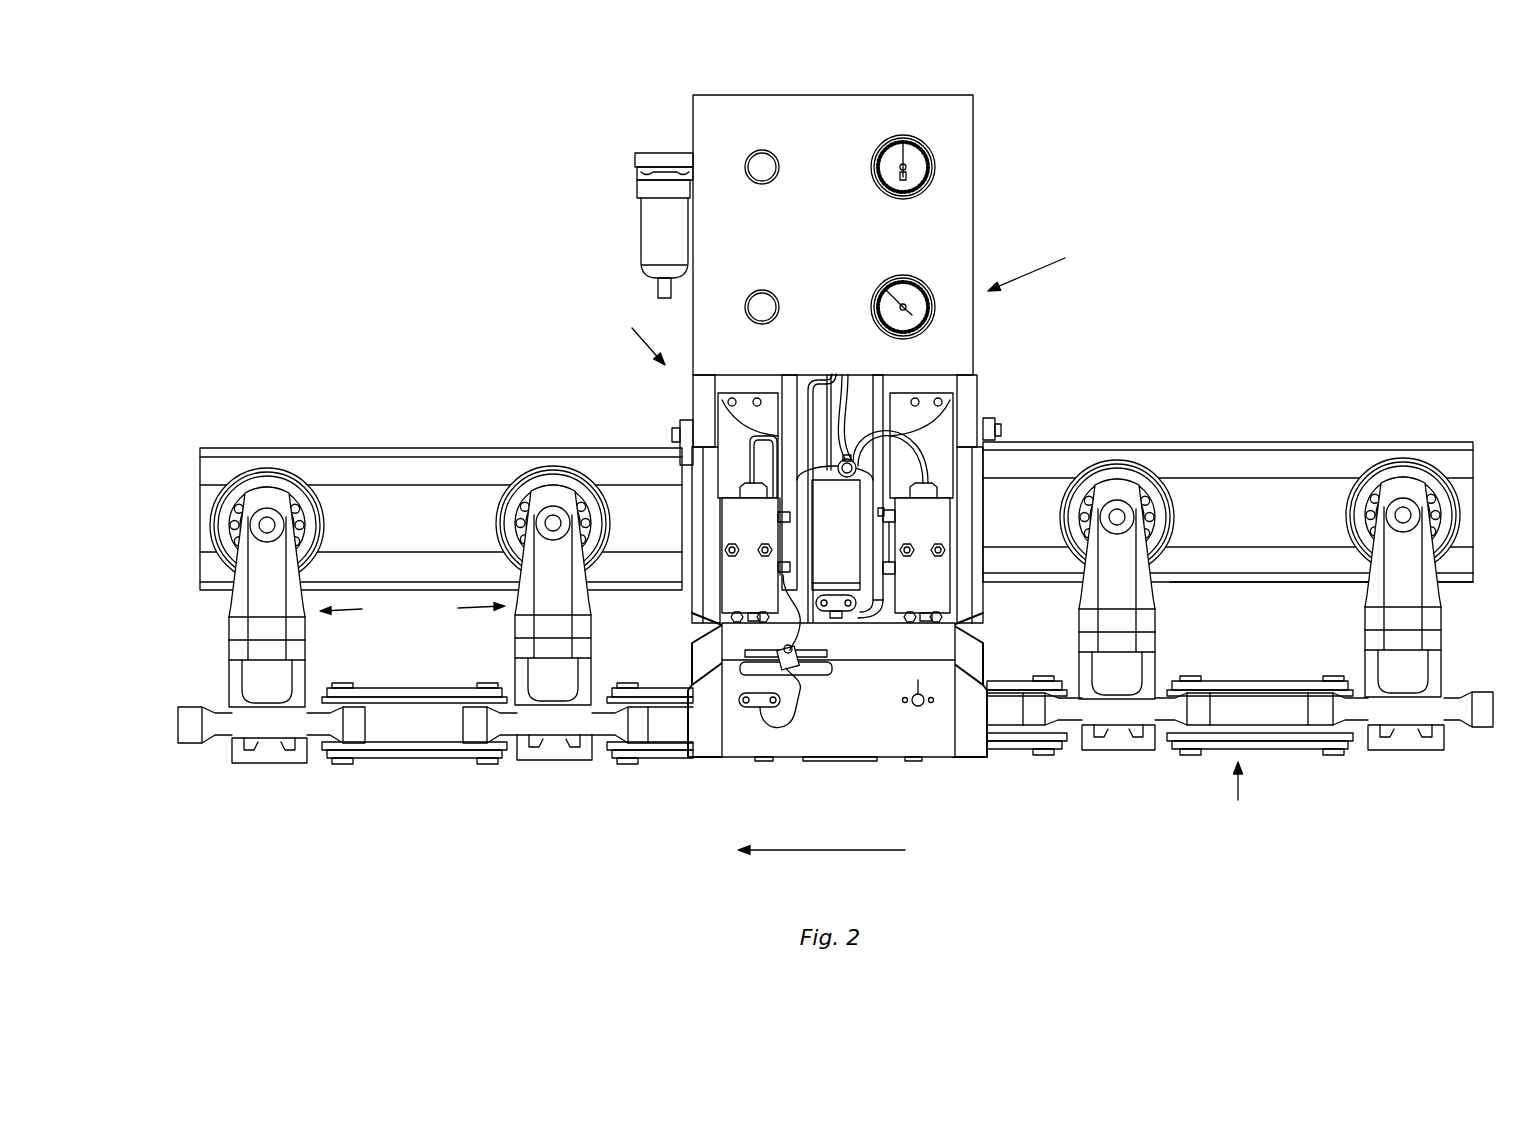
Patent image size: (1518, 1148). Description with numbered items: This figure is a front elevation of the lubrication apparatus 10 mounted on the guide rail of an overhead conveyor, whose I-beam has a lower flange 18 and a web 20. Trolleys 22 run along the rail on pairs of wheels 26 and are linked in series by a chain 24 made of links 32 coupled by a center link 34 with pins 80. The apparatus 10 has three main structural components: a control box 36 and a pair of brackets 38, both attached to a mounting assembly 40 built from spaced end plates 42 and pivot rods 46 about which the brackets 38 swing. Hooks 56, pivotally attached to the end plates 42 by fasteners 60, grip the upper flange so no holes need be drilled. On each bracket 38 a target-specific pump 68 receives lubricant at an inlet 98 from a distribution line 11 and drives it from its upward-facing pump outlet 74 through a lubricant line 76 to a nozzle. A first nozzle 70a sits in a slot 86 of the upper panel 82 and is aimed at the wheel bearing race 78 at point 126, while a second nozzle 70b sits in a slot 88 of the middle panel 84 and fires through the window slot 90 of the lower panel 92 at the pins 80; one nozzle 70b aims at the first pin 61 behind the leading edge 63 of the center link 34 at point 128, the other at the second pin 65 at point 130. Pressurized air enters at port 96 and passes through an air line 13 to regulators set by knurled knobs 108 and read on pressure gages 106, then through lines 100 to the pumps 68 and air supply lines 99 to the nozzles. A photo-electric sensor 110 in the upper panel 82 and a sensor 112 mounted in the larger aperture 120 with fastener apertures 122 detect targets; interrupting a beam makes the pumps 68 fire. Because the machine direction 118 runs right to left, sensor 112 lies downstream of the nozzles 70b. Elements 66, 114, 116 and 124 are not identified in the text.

The lubrication apparatus 10 is at (1039, 264).
The lubricant distribution lines 11 is at (764, 392).
The air line 13 is at (880, 498).
The lower flange 18 is at (1267, 584).
The web 20 is at (1255, 470).
The trolleys 22 is at (412, 610).
The chain 24 is at (1237, 800).
The wheels 26 is at (835, 488).
The links 32 is at (393, 760).
The center link 34 is at (556, 762).
The control box 36 is at (975, 228).
The brackets 38 is at (893, 760).
The mounting assembly 40 is at (634, 335).
The end plates 42 is at (975, 380).
The pivot rods 46 is at (855, 383).
The hooks 56 is at (672, 440).
The fasteners 60 is at (672, 430).
The first pin 61 is at (490, 766).
The leading edge 63 is at (375, 700).
The second pin 65 is at (628, 765).
The side plate 66 is at (704, 640).
The pump 68 is at (740, 512).
The first nozzle 70a is at (843, 380).
The second nozzle 70b is at (776, 652).
The pump outlet 74 is at (930, 498).
The lubricant line 76 is at (726, 392).
The wheel bearing race 78 is at (546, 487).
The pins 80 is at (470, 692).
The upper panel 82 is at (995, 430).
The middle panel 84 is at (960, 645).
The slot 86 is at (836, 482).
The slot 88 is at (830, 654).
The window slot 90 is at (797, 703).
The lower panel 92 is at (660, 240).
The port 96 is at (664, 156).
The inlet 98 is at (893, 512).
The air supply lines 99 is at (822, 384).
The lines 100 is at (878, 537).
The pressure gages 106 is at (898, 276).
The knurled knob 108 is at (767, 288).
The photo-electric sensor 110 is at (828, 596).
The photo-electric sensor 112 is at (754, 733).
The arm 114 is at (228, 612).
The shaft 116 is at (184, 732).
The machine direction 118 is at (786, 849).
The larger aperture 120 is at (920, 712).
The smaller apertures 122 is at (917, 693).
The fitting 124 is at (868, 604).
The point 126 is at (553, 465).
The point 128 is at (513, 687).
The point 130 is at (324, 690).